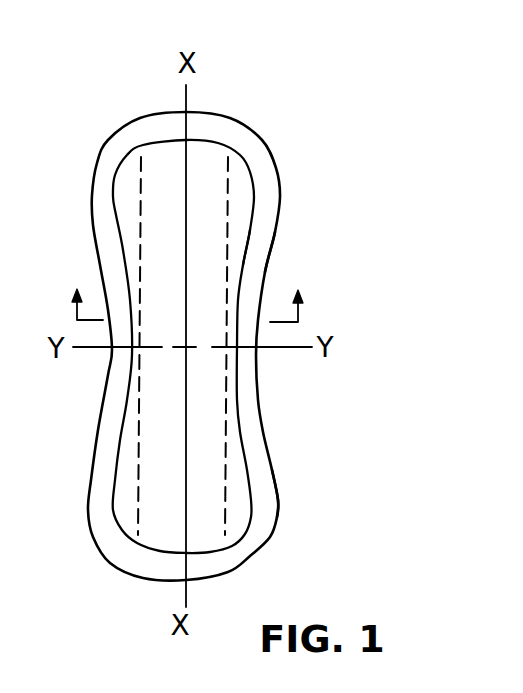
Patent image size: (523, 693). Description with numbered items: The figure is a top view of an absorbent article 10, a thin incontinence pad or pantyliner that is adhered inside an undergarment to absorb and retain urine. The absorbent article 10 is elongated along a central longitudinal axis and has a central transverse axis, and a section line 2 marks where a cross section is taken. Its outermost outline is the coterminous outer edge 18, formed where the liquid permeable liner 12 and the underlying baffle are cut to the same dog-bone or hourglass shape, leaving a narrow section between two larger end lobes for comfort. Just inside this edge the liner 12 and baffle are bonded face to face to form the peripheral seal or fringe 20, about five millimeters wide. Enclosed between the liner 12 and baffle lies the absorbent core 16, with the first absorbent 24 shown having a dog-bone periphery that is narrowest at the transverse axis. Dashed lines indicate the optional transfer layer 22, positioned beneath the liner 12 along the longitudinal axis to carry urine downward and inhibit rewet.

The absorbent article 10 is at (345, 88).
The liquid permeable liner 12 is at (253, 141).
The absorbent core 16 is at (147, 144).
The coterminous outer edge 18 is at (278, 497).
The peripheral seal or fringe 20 is at (262, 208).
The transfer layer 22 is at (207, 440).
The first absorbent 24 is at (245, 242).
The section line 2- 2 is at (187, 288).